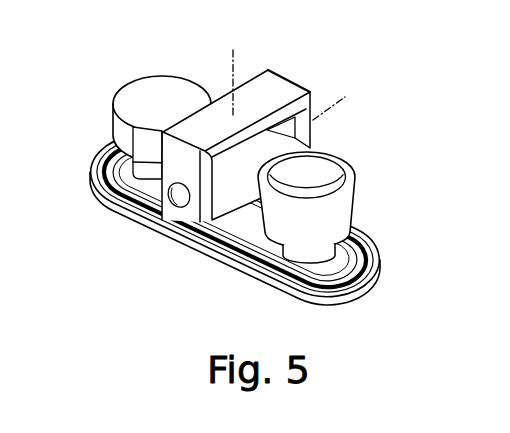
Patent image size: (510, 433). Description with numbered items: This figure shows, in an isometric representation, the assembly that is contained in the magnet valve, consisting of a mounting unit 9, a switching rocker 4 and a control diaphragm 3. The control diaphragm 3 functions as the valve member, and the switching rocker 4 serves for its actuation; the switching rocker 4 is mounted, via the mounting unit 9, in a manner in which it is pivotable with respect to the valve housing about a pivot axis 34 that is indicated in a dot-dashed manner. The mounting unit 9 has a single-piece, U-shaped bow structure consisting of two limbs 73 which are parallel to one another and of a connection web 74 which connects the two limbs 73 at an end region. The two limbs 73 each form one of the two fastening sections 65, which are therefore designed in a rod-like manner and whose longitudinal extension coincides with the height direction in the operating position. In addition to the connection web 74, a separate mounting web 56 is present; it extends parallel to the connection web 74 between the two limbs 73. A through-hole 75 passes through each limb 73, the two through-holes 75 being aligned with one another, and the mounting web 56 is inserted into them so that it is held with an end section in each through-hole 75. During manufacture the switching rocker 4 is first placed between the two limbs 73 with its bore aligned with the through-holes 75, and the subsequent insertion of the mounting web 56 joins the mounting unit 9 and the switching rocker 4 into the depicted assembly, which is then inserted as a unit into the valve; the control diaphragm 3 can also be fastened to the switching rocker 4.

The control diaphragm 3 is at (348, 290).
The switching rocker 4 is at (293, 149).
The mounting unit 9 is at (268, 62).
The pivot axis 34 is at (147, 222).
The mounting web 56 is at (181, 208).
The fastening sections 65 is at (103, 146).
The limbs 73 is at (303, 130).
The connection web 74 is at (211, 120).
The through-hole 75 is at (118, 197).